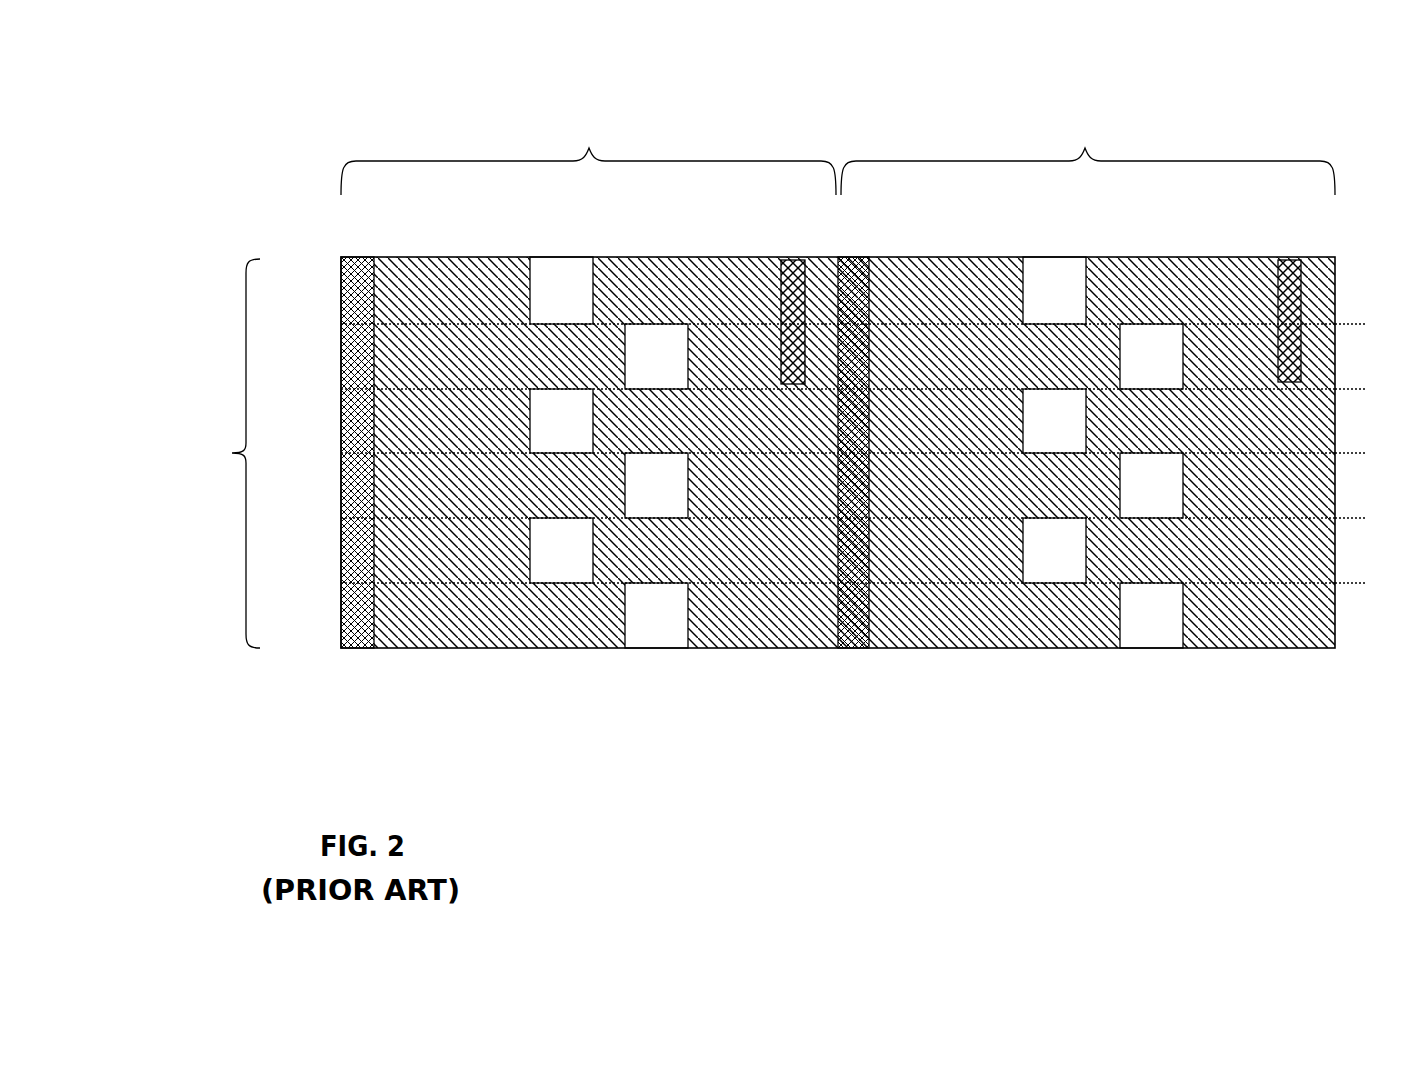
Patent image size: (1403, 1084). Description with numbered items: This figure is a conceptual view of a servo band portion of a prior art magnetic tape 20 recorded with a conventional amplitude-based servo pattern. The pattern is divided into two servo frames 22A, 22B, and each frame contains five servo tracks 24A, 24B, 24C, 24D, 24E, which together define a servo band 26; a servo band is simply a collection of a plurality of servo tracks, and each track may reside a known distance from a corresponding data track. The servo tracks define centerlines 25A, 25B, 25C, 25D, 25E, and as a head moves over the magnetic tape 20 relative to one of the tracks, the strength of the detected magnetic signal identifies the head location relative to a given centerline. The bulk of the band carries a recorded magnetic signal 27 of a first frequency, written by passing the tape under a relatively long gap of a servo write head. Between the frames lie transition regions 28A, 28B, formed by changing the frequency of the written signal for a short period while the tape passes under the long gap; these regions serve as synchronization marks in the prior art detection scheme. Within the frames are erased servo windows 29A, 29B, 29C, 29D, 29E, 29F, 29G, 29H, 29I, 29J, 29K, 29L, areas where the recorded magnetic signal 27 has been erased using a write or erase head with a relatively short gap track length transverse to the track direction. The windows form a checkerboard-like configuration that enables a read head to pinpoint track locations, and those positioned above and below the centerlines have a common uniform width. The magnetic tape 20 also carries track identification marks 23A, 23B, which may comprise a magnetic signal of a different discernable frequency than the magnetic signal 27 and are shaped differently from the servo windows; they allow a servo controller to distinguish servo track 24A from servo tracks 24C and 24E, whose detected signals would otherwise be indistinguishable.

The magnetic tape 20 is at (1336, 627).
The servo frame 22A is at (588, 158).
The servo frame 22B is at (1088, 158).
The track identification mark 23A is at (792, 252).
The track identification mark 23B is at (1288, 252).
The servo track 24A is at (322, 316).
The servo track 24B is at (322, 381).
The servo track 24C is at (322, 445).
The servo track 24D is at (322, 510).
The servo track 24E is at (322, 575).
The centerline 25A is at (1342, 315).
The centerline 25B is at (1355, 380).
The centerline 25C is at (1357, 444).
The centerline 25D is at (1357, 509).
The centerline 25E is at (1357, 574).
The servo band 26 is at (232, 453).
The magnetic signal 27 is at (892, 600).
The transition region 28A is at (333, 640).
The transition region 28B is at (856, 249).
The servo window 29A is at (556, 276).
The servo window 29B is at (664, 346).
The servo window 29C is at (542, 412).
The servo window 29D is at (655, 488).
The servo window 29E is at (560, 537).
The servo window 29F is at (660, 597).
The servo window 29G is at (1062, 283).
The servo window 29H is at (1150, 357).
The servo window 29I is at (1036, 400).
The servo window 29J is at (1140, 478).
The servo window 29K is at (1055, 535).
The servo window 29L is at (1152, 603).